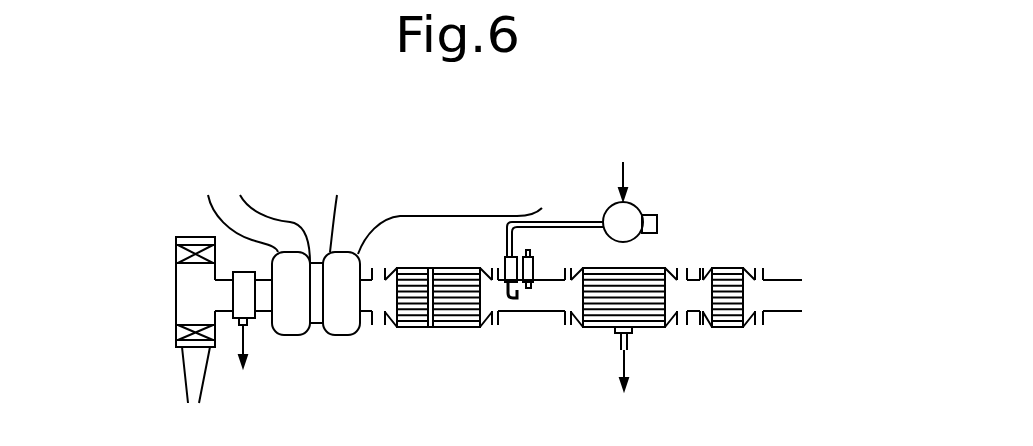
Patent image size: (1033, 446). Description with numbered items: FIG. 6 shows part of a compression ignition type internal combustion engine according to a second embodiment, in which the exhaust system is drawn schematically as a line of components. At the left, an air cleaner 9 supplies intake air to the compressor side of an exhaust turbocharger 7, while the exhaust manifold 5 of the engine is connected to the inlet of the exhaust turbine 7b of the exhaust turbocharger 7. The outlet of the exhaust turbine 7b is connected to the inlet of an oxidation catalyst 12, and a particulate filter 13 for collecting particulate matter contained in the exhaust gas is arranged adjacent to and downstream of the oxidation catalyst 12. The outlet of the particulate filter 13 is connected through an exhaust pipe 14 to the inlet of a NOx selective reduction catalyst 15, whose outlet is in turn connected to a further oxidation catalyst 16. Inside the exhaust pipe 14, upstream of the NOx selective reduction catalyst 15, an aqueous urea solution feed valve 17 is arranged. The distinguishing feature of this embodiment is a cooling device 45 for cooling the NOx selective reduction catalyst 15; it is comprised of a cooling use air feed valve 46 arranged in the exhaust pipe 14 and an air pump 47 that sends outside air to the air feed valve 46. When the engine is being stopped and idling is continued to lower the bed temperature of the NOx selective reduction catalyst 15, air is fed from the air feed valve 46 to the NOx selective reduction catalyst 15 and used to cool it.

The exhaust manifold 5 is at (432, 208).
The exhaust turbocharger 7 is at (318, 345).
The exhaust turbine 7b is at (343, 330).
The air cleaner 9 is at (185, 297).
The oxidation catalyst 12 is at (412, 320).
The particulate filter 13 is at (457, 320).
The exhaust pipe 14 is at (532, 310).
The NOx selective reduction catalyst 15 is at (648, 318).
The oxidation catalyst 16 is at (727, 318).
The aqueous urea solution feed valve 17 is at (535, 267).
The cooling device 45 is at (558, 192).
The cooling use air feed valve 46 is at (506, 262).
The air pump 47 is at (636, 208).